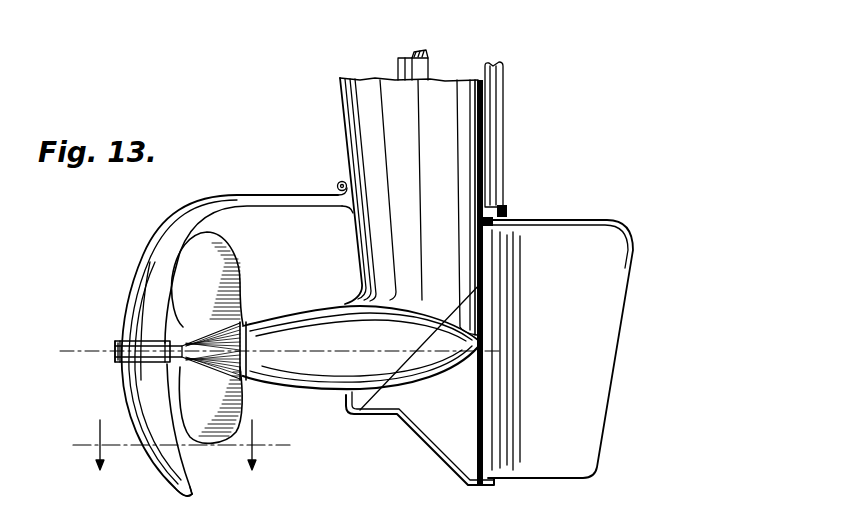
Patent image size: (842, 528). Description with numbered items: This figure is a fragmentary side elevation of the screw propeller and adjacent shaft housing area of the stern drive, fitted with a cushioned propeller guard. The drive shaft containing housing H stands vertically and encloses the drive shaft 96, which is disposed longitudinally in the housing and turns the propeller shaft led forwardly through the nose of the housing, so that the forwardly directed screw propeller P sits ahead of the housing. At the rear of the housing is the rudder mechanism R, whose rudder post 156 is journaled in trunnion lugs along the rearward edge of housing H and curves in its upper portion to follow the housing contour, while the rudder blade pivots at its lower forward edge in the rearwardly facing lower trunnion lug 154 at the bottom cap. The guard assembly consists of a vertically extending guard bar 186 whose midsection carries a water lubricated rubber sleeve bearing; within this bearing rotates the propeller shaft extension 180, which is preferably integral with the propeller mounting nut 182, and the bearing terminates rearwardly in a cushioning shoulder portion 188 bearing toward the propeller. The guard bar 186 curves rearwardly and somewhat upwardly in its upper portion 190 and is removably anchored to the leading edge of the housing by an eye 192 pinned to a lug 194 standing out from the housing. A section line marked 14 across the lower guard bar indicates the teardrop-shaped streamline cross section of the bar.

The drive shaft 96 is at (428, 66).
The rudder post 156 is at (503, 114).
The rudder mechanism R is at (527, 237).
The housing H is at (446, 201).
The lug 194 is at (341, 182).
The eye 192 is at (337, 186).
The upper portion 190 is at (258, 198).
The screw propeller P is at (240, 288).
The cushioning shoulder portion 188 is at (116, 342).
The propeller shaft extension 180 is at (116, 350).
The propeller mounting nut 182 is at (160, 368).
The guard bar 186 is at (178, 492).
The lower trunnion lug 154 is at (503, 487).
The section line 14- 14 is at (181, 445).